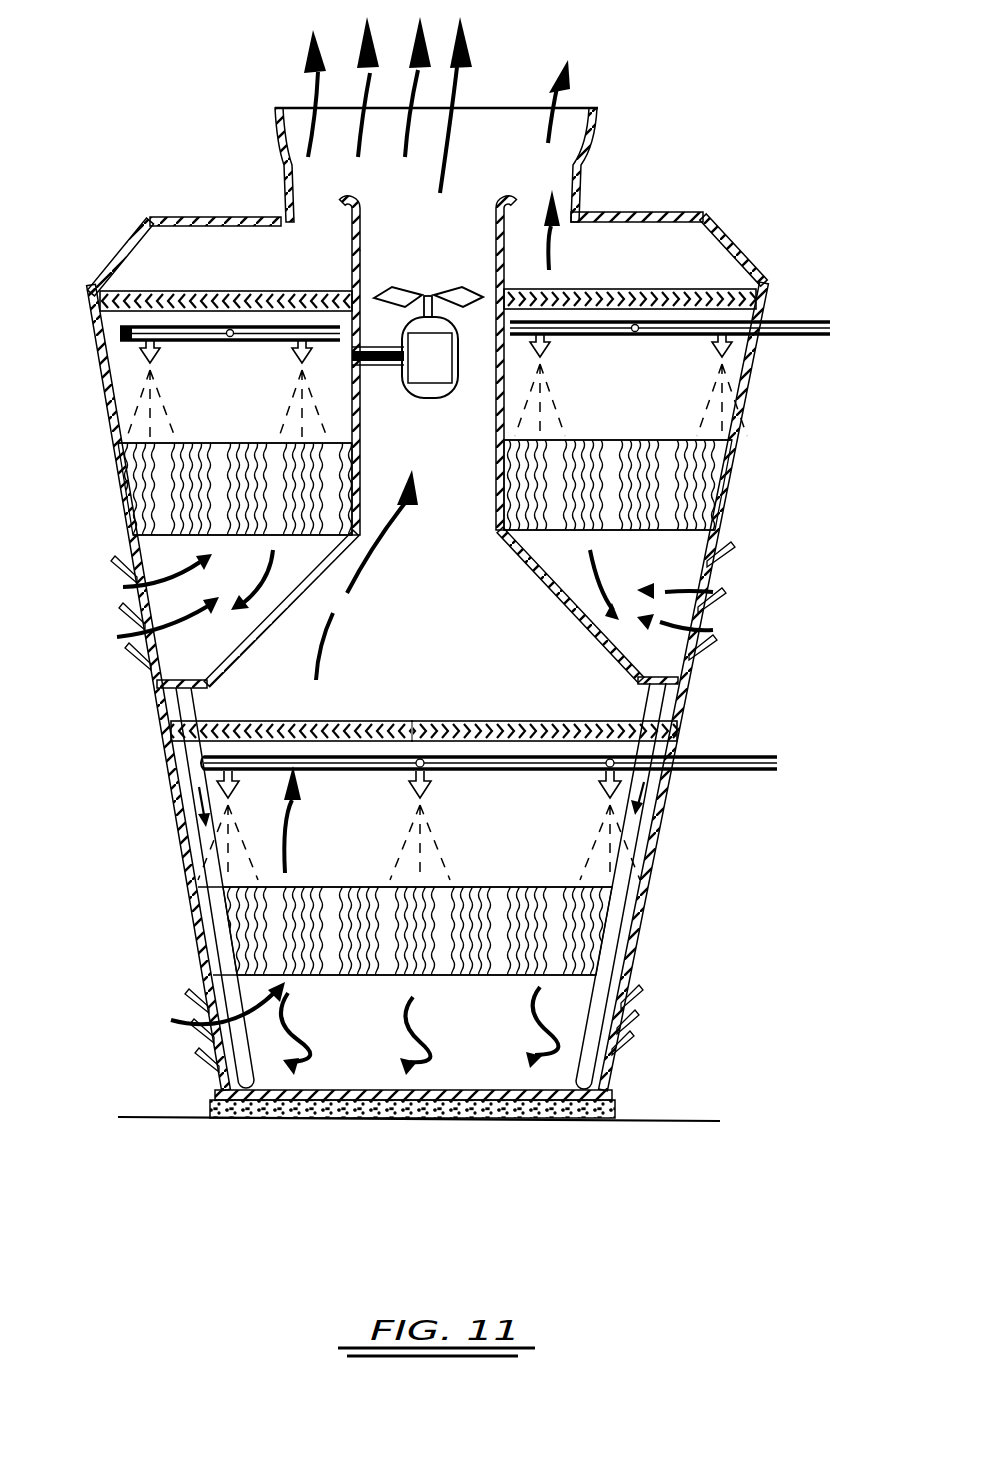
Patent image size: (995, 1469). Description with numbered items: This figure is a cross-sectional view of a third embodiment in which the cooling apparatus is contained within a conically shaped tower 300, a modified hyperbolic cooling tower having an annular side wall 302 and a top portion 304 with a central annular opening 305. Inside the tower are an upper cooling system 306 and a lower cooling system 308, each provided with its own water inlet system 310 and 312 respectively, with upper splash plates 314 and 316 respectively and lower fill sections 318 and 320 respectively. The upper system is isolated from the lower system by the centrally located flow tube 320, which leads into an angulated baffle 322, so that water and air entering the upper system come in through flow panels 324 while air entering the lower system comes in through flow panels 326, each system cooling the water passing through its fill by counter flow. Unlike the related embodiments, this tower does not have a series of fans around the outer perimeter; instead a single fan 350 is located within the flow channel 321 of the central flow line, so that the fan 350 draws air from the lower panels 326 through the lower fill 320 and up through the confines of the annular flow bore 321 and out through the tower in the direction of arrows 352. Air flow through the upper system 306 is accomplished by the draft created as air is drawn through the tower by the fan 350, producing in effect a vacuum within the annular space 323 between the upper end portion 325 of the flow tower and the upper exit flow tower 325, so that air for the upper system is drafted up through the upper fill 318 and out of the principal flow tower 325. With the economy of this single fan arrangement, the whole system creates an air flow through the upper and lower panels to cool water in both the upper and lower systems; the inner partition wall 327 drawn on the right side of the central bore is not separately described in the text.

The conically shaped tower 300 is at (740, 470).
The annular side wall 302 is at (688, 706).
The top portion 304 is at (665, 213).
The central annular opening 305 is at (477, 127).
The upper cooling system 306 is at (73, 285).
The lower cooling system 308 is at (208, 1092).
The water inlet system 310 is at (793, 318).
The water inlet system 312 is at (768, 768).
The upper splash plate 314 is at (623, 290).
The upper splash plate 316 is at (541, 690).
The upper fill 318 is at (712, 445).
The lower fill / centrally located flow tube 320 is at (358, 240).
The flow channel 321 is at (453, 248).
The angulated baffle 322 is at (332, 602).
The annular space 323 is at (340, 198).
The flow panels 324 is at (723, 594).
The upper end portion / upper exit flow tower 325 is at (278, 141).
The flow panels 326 is at (640, 1008).
The right inner partition wall 327 is at (563, 183).
The fan 350 is at (434, 398).
The Arrows 352 is at (468, 60).